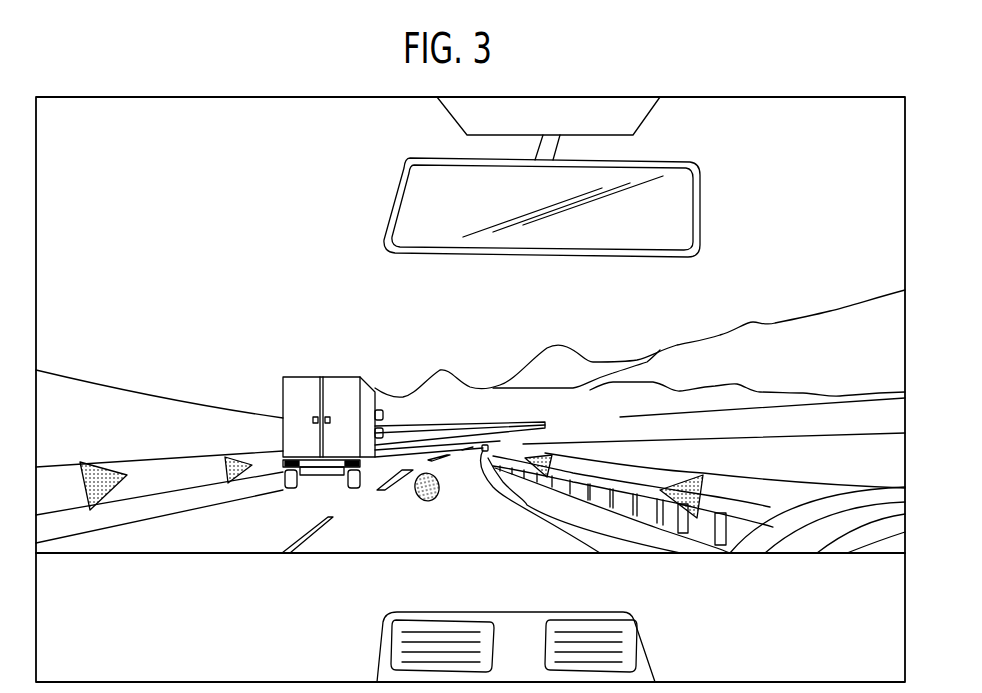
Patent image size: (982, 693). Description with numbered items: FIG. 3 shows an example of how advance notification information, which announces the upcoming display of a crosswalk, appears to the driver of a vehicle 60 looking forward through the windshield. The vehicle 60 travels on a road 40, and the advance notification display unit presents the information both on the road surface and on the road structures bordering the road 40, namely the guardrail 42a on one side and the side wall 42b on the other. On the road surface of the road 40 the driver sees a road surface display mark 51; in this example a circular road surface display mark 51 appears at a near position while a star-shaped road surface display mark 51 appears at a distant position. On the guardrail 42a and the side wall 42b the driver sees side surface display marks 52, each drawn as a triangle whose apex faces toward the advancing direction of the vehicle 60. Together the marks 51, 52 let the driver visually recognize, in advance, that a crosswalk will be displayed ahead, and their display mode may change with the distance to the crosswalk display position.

The road 40 is at (371, 522).
The guardrail 42a is at (778, 493).
The side wall 42b is at (167, 472).
The road surface display mark 51 is at (486, 447).
The side surface display mark 52 is at (104, 462).
The vehicle 60 is at (311, 631).